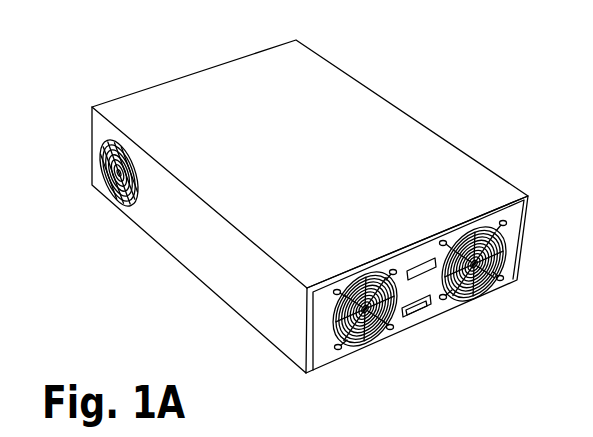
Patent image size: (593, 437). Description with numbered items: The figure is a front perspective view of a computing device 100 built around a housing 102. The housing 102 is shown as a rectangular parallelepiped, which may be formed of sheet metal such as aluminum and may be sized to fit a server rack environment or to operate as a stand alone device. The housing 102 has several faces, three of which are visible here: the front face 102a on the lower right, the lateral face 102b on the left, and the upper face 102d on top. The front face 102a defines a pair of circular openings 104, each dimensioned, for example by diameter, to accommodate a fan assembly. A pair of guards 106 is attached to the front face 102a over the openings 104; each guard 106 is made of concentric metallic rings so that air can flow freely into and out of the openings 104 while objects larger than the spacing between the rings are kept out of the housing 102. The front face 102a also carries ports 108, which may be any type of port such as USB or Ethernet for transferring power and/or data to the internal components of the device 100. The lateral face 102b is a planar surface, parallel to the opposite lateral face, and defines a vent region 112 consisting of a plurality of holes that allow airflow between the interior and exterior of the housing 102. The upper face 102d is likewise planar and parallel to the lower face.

The computing device 100 is at (100, 82).
The housing 102 is at (165, 98).
The front face 102a is at (321, 362).
The lateral face 102b is at (240, 305).
The upper face 102d is at (351, 88).
The openings 104 is at (355, 346).
The guards 106 is at (371, 338).
The ports 108 is at (424, 310).
The vent region 112 is at (99, 163).